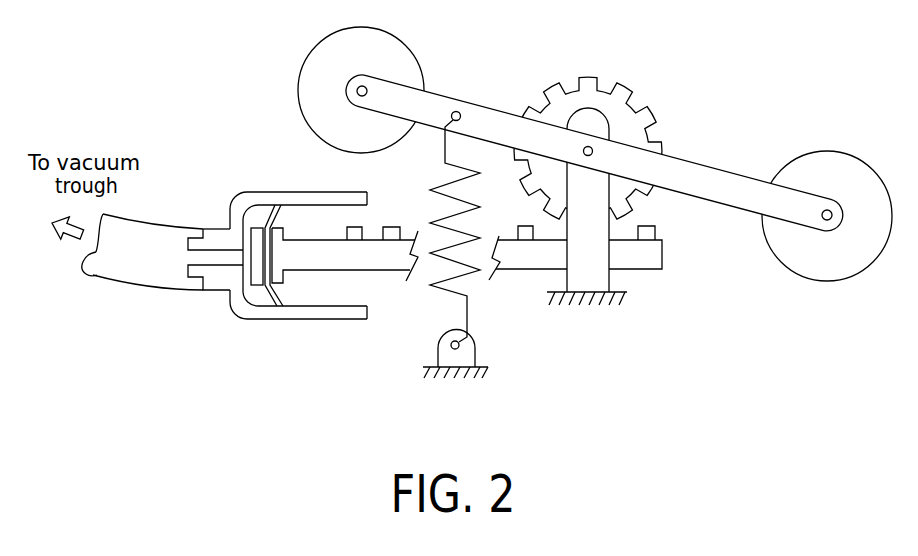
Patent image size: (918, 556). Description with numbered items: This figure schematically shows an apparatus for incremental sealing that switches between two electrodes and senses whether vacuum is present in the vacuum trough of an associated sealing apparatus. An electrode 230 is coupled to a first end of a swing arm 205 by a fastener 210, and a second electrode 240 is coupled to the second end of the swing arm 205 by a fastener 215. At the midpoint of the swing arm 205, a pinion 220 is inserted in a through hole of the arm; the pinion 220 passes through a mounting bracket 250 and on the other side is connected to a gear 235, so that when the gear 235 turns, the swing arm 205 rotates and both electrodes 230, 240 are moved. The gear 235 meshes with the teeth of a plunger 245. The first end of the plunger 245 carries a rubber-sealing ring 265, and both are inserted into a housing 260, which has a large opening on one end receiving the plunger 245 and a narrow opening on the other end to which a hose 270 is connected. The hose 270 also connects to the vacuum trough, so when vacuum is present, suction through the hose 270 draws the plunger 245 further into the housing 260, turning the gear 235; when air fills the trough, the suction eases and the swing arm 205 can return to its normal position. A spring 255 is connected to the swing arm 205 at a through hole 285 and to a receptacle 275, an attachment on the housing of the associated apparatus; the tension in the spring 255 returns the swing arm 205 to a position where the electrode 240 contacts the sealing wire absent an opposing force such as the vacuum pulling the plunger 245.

The swing arm 205 is at (720, 170).
The fastener 210 is at (356, 90).
The fastener 215 is at (828, 211).
The pinion 220 is at (588, 147).
The electrode 230 is at (380, 62).
The gear 235 is at (637, 107).
The electrode 240 is at (846, 267).
The plunger 245 is at (310, 252).
The mounting bracket 250 is at (607, 249).
The spring 255 is at (452, 298).
The housing 260 is at (230, 219).
The rubber-sealing ring 265 is at (276, 296).
The hose 270 is at (153, 264).
The receptacle 275 is at (474, 355).
The through hole 285 is at (456, 111).